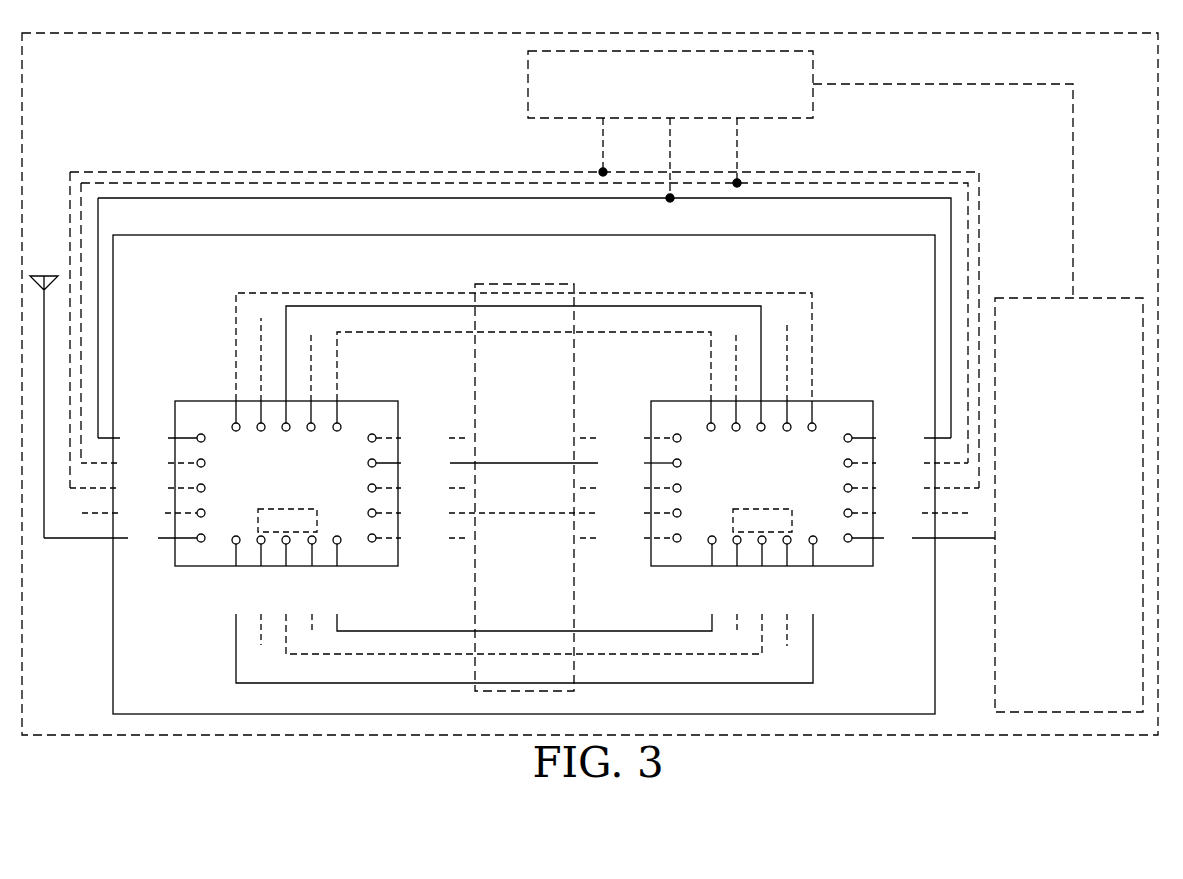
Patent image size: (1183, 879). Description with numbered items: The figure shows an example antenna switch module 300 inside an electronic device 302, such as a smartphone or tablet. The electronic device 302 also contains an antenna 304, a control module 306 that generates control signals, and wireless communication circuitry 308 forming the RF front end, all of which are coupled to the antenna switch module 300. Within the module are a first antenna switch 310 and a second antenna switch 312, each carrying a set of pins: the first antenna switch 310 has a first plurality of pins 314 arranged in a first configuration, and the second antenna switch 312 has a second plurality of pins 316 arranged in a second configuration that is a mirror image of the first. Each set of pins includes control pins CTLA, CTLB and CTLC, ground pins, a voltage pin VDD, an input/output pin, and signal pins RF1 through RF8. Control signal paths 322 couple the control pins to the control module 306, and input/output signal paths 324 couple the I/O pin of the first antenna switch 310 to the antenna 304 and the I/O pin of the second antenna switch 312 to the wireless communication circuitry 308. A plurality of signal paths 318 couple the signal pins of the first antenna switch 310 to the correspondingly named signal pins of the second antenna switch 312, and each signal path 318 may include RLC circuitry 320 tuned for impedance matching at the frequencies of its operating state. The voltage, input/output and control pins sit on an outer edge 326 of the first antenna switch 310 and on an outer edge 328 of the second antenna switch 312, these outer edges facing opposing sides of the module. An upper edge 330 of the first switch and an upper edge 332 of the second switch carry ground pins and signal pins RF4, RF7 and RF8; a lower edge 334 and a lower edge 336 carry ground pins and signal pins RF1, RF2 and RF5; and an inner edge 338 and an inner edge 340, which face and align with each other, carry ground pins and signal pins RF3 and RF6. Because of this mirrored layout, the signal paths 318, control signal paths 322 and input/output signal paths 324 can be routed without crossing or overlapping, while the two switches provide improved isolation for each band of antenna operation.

The antenna switch module 300 is at (866, 235).
The electronic device 302 is at (159, 120).
The antenna 304 is at (44, 275).
The control module 306 is at (528, 80).
The wireless communication circuitry 308 is at (1106, 298).
The first antenna switch 310 is at (275, 500).
The second antenna switch 312 is at (749, 500).
The first plurality of pins 314 is at (201, 398).
The second plurality of pins 316 is at (838, 396).
The signal paths 318 is at (406, 307).
The RLC circuitry 320 is at (538, 286).
The control signal paths 322 is at (340, 142).
The input/output signal paths 324 is at (52, 566).
The outer edge of first antenna switch 326 is at (175, 417).
The outer edge of second antenna switch 328 is at (873, 417).
The upper edge of first antenna switch 330 is at (355, 401).
The upper edge of second antenna switch 332 is at (661, 401).
The lower edge of first antenna switch 334 is at (190, 567).
The lower edge of second antenna switch 336 is at (857, 567).
The inner edge of first antenna switch 338 is at (398, 412).
The inner edge of second antenna switch 340 is at (651, 558).